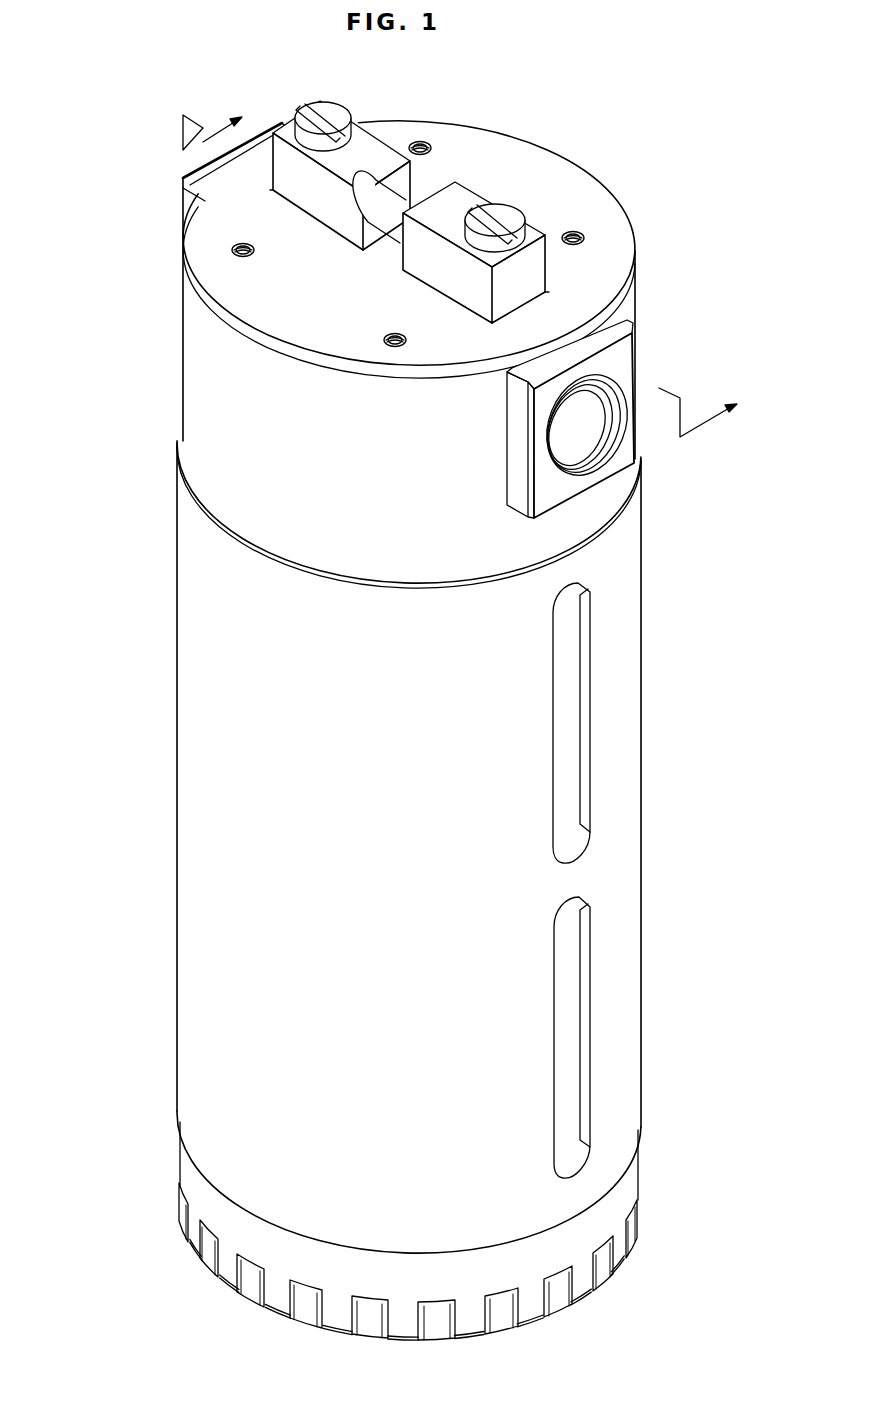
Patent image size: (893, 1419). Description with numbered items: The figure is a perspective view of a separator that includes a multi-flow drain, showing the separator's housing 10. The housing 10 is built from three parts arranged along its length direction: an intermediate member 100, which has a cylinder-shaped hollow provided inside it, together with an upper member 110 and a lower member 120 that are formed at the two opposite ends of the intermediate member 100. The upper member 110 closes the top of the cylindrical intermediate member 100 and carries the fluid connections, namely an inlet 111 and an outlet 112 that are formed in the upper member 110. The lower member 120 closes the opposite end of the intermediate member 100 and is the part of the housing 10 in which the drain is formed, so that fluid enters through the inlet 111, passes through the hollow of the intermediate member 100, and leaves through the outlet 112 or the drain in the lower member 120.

The housing 10 is at (96, 372).
The intermediate member 100 is at (183, 682).
The upper member 110 is at (183, 374).
The inlet 111 is at (590, 423).
The outlet 112 is at (266, 140).
The lower member 120 is at (189, 1217).